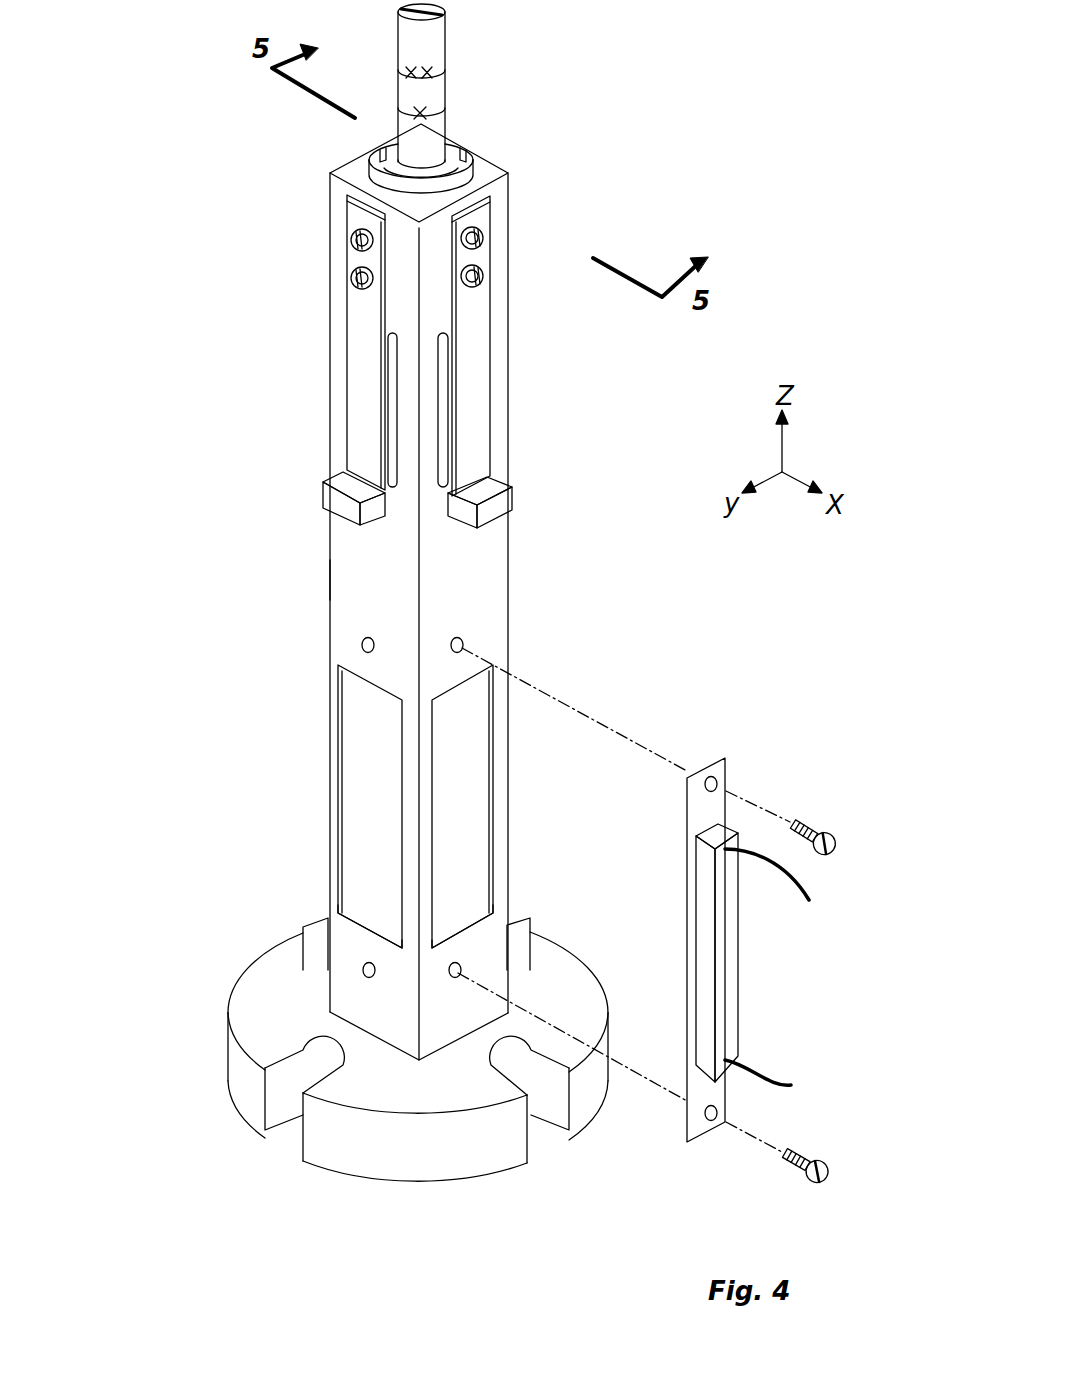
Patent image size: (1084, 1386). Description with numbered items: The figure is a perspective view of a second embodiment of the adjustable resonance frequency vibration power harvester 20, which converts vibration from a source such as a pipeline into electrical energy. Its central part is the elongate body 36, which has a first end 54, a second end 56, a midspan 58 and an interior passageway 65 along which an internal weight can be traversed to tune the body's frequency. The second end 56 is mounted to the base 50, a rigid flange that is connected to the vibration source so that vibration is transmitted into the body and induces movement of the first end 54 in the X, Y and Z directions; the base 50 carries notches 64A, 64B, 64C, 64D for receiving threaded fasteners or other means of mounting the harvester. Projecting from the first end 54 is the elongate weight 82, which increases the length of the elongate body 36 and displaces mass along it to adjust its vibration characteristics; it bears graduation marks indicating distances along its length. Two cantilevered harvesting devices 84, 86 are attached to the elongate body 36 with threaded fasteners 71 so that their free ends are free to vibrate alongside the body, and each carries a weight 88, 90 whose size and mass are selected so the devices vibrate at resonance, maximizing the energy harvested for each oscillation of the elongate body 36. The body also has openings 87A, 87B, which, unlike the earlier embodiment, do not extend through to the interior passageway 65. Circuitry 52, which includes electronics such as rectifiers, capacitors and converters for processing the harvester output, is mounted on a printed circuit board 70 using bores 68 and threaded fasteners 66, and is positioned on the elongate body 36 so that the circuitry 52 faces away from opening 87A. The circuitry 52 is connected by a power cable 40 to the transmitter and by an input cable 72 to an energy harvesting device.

The adjustable resonance frequency vibration power harvester 20 is at (591, 145).
The elongate body 36 is at (560, 567).
The power cable 40 is at (725, 1060).
The base 50 is at (462, 1143).
The circuitry 52 is at (725, 958).
The first end 54 is at (486, 168).
The second end 56 is at (353, 997).
The midspan 58 is at (340, 624).
The notch 64A is at (533, 1107).
The notch 64B is at (517, 948).
The notch 64C is at (310, 950).
The notch 64D is at (277, 1103).
The passageway 65 is at (386, 712).
The threaded fasteners 66 is at (825, 860).
The bores 68 is at (462, 645).
The printed circuit board 70 is at (691, 1133).
The threaded fasteners 71 is at (483, 237).
The input cable 72 is at (733, 849).
The elongate weight 82 is at (437, 88).
The cantilevered harvesting device 84 is at (362, 385).
The cantilevered harvesting device 86 is at (477, 400).
The opening 87A is at (451, 918).
The opening 87B is at (362, 918).
The weight 88 is at (340, 498).
The weight 90 is at (497, 507).